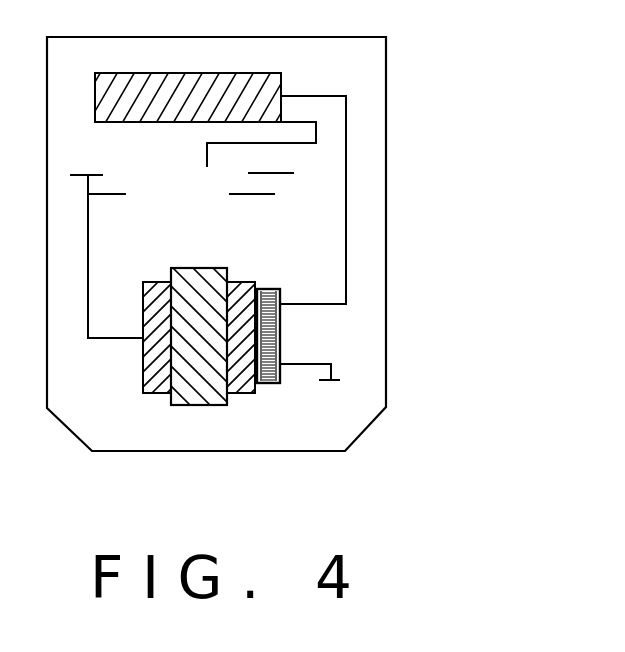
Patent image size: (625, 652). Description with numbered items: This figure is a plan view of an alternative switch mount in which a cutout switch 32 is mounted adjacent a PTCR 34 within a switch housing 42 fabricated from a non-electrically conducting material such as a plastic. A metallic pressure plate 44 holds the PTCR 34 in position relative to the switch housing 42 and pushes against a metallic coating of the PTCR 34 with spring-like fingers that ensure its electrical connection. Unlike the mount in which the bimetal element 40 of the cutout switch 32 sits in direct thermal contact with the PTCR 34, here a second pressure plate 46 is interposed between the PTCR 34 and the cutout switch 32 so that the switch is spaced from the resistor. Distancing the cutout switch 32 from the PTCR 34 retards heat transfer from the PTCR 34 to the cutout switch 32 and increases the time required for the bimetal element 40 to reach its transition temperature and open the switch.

The cutout switch 32 is at (273, 405).
The PTCR 34 is at (205, 403).
The bimetal element 40 is at (280, 338).
The switch housing 42 is at (369, 178).
The metallic pressure plate 44 is at (153, 390).
The second pressure plate 46 is at (241, 393).